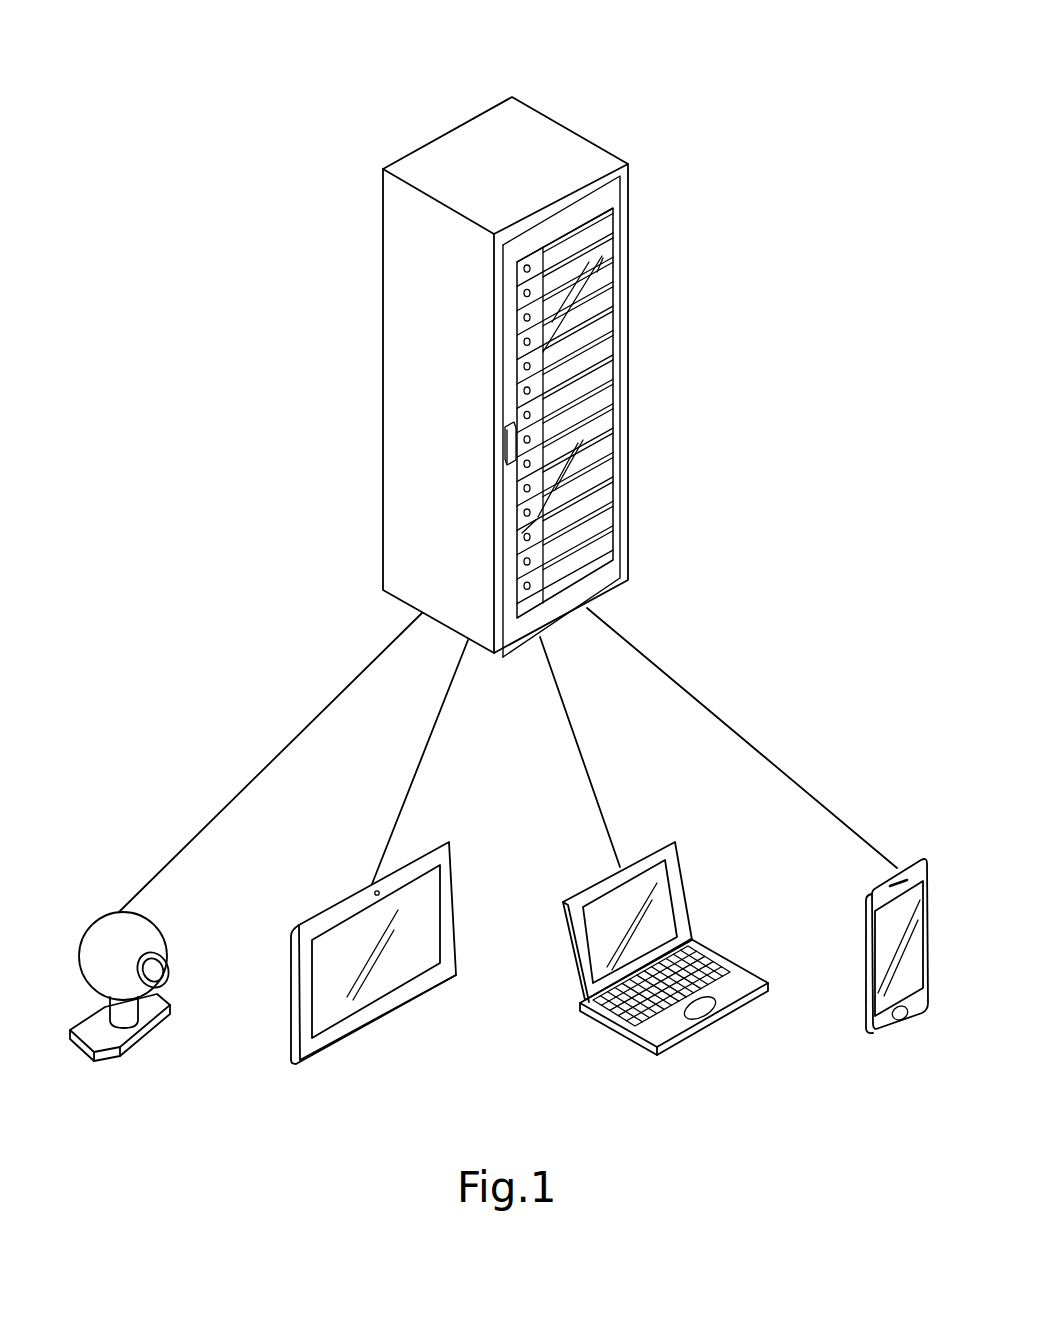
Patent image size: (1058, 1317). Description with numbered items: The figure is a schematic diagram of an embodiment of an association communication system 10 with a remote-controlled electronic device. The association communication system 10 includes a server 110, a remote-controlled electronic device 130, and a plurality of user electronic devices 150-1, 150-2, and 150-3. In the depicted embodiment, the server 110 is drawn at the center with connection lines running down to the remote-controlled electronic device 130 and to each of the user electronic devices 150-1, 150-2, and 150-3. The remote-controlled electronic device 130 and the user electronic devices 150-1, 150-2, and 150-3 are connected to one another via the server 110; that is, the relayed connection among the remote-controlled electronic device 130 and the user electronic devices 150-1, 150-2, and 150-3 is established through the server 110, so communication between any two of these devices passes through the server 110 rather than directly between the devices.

The association communication system 10 is at (673, 130).
The server 110 is at (617, 570).
The remote-controlled electronic device 130 is at (150, 1030).
The user electronic device 150-1 is at (890, 1037).
The user electronic device 150-2 is at (692, 1030).
The user electronic device 150-3 is at (347, 1027).